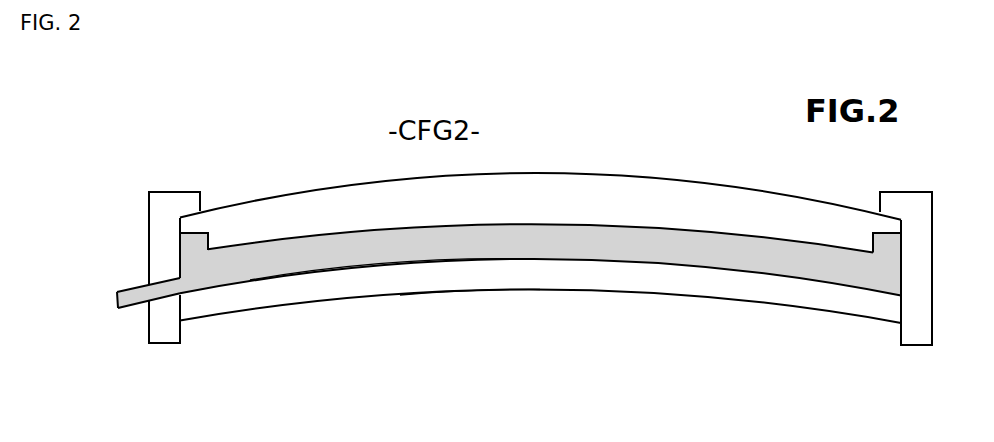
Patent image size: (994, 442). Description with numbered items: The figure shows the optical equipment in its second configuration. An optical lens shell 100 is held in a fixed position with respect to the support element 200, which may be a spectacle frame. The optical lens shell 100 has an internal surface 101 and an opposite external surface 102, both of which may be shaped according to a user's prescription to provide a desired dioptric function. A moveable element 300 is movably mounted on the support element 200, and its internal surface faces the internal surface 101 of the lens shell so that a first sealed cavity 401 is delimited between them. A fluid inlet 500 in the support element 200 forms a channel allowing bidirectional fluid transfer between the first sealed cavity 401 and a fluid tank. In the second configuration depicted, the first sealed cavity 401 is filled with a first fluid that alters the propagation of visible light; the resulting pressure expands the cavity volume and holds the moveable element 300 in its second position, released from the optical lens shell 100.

The optical lens shell 100 is at (604, 284).
The internal surface 101 is at (281, 284).
The external surface 102 is at (432, 300).
The support element 200 is at (163, 207).
The moveable element 300 is at (662, 195).
The first sealed cavity 401 is at (360, 242).
The fluid inlet 500 is at (118, 293).